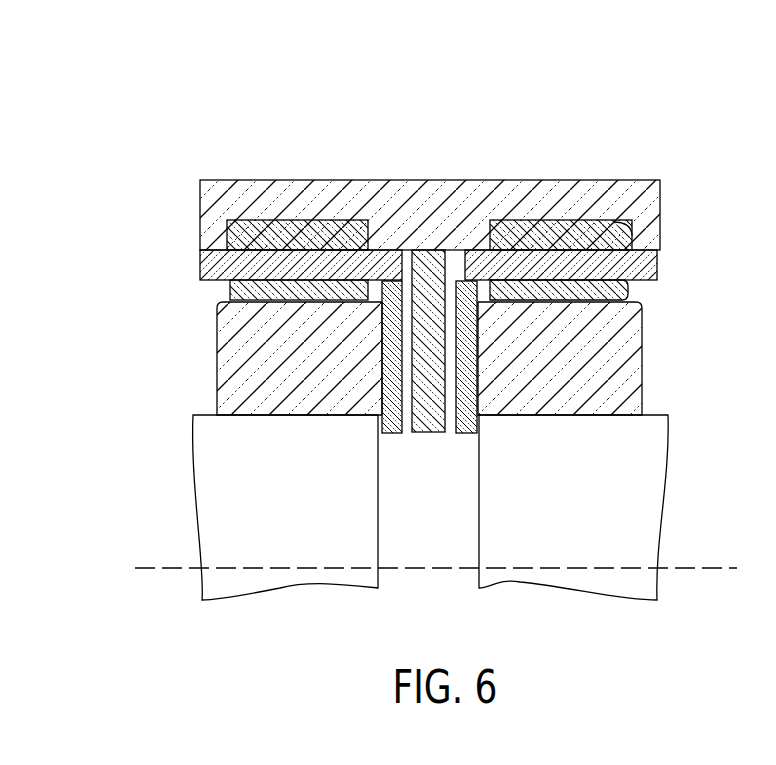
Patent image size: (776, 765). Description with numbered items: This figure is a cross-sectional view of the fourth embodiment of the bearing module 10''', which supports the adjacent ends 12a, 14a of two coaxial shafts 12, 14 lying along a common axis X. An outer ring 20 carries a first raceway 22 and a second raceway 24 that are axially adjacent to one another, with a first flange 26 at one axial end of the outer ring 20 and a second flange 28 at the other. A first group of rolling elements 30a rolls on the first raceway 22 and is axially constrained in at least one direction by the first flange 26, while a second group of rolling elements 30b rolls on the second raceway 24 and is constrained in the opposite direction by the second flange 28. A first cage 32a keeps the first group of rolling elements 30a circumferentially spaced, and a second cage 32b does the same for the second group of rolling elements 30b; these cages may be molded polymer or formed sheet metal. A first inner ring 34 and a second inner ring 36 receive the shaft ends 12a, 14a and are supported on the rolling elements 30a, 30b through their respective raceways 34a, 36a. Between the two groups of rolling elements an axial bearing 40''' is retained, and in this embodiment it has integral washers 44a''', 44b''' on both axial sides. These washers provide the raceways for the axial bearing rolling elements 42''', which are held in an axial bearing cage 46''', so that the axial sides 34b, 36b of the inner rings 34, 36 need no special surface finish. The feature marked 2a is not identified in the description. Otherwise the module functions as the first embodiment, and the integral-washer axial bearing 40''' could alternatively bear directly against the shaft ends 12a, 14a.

The bearing module 10''' is at (524, 76).
The coaxial shaft 12 is at (286, 511).
The shaft end 12a is at (380, 533).
The coaxial shaft 14 is at (563, 511).
The shaft end 14a is at (477, 533).
The outer ring 20 is at (365, 190).
The first raceway 22 is at (205, 240).
The second raceway 24 is at (630, 232).
The first flange 26 is at (227, 243).
The second flange 28 is at (650, 223).
The bore 2a is at (450, 300).
The first group of rolling elements 30a is at (233, 288).
The second group of rolling elements 30b is at (628, 292).
The first cage 32a is at (227, 262).
The second cage 32b is at (650, 278).
The first inner ring 34 is at (288, 372).
The first raceway of first inner ring 34a is at (230, 293).
The first axial side raceway 34b is at (393, 434).
The second inner ring 36 is at (555, 372).
The second raceway of second inner ring 36a is at (633, 300).
The second axial side raceway 36b is at (463, 434).
The axial bearing 40''' is at (460, 154).
The axial bearing rolling elements 42''' is at (271, 337).
The integral washer 44a''' is at (385, 186).
The integral washer 44b''' is at (516, 187).
The axial bearing cage 46''' is at (429, 273).
The axis X is at (713, 568).